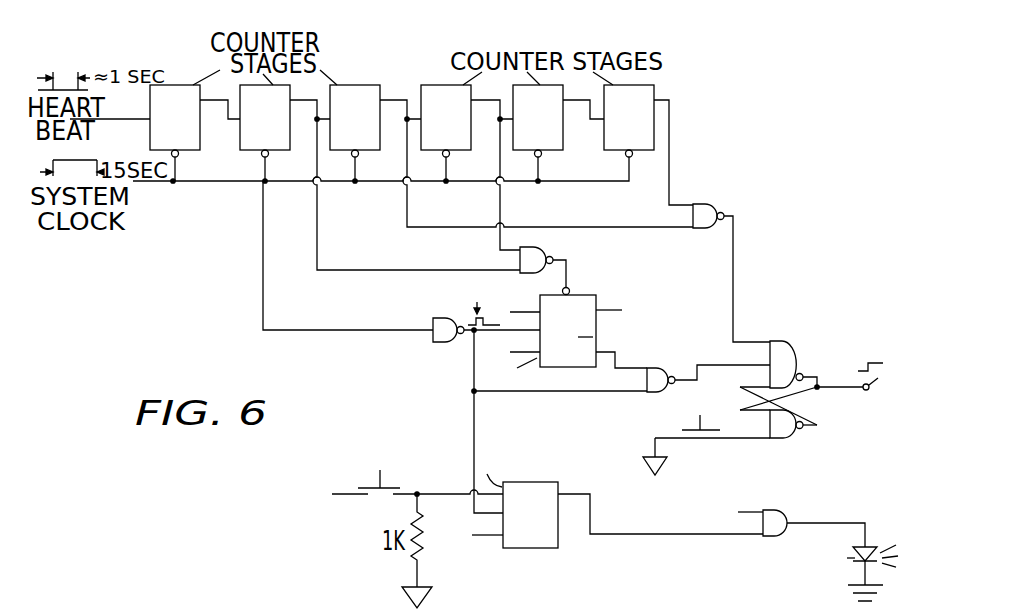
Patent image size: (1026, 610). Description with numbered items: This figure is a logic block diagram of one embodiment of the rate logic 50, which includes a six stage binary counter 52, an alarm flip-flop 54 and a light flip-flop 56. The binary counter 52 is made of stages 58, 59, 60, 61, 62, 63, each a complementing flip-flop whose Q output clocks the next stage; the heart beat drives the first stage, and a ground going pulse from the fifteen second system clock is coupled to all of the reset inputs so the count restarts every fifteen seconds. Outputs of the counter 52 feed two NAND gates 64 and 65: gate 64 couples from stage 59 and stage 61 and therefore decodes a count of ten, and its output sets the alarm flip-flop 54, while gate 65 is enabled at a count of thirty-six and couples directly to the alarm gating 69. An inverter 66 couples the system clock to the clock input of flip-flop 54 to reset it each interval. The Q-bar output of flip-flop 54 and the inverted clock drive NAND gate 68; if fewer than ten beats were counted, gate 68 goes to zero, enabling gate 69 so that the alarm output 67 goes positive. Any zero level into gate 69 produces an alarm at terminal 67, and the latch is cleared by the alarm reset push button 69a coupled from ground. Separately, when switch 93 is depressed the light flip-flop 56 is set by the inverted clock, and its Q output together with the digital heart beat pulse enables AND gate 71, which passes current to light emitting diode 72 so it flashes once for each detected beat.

The rate logic 50 is at (213, 355).
The six stage binary counter 52 is at (398, 66).
The alarm flip-flop 54 is at (572, 338).
The light flip-flop 56 is at (600, 499).
The counter stage 58 is at (175, 133).
The counter stage 59 is at (265, 133).
The counter stage 60 is at (355, 133).
The counter stage 61 is at (446, 133).
The counter stage 62 is at (538, 133).
The counter stage 63 is at (629, 121).
The NAND gate 64 is at (547, 247).
The NAND gate 65 is at (705, 230).
The inverter 66 is at (443, 346).
The alarm output 67 is at (876, 388).
The NAND gate 68 is at (669, 366).
The alarm gating 69 is at (783, 439).
The alarm reset push button 69a is at (697, 439).
The AND gate 71 is at (772, 540).
The light emitting diode 72 is at (874, 548).
The switch 93 is at (370, 503).